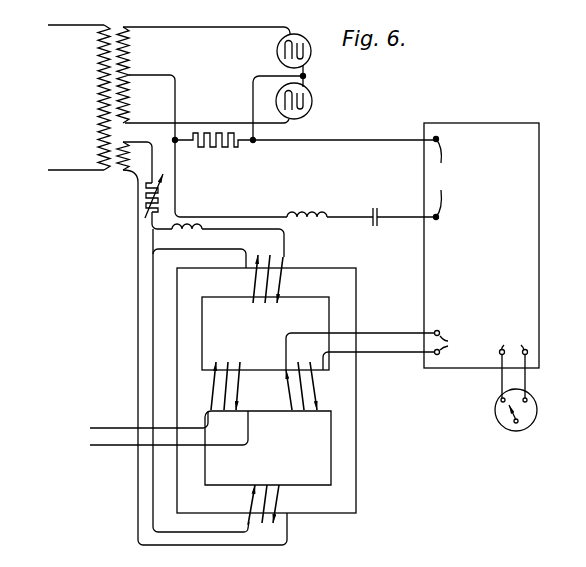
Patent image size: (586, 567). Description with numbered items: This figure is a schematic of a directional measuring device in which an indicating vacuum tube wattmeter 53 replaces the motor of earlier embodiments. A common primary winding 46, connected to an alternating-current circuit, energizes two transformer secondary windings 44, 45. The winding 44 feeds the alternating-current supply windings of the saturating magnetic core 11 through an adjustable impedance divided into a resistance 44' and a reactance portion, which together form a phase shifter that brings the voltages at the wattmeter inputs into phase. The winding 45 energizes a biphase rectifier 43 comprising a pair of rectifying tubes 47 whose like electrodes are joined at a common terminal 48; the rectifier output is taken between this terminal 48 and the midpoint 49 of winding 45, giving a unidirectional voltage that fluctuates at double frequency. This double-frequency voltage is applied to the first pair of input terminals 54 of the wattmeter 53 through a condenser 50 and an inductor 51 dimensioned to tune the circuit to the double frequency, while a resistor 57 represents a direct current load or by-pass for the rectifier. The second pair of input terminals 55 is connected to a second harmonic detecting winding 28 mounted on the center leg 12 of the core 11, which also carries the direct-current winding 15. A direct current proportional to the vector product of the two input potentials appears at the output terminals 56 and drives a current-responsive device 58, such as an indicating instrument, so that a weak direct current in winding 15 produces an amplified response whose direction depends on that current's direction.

The magnetic core 11 is at (206, 457).
The center leg 12 is at (271, 412).
The direct-current winding 15 is at (229, 367).
The second harmonic detecting winding 28 is at (279, 480).
The biphase rectifier 43 is at (218, 57).
The transformer secondary winding 44 is at (134, 157).
The adjustable resistance 44' is at (136, 196).
The transformer secondary winding 45 is at (128, 116).
The primary winding 46 is at (99, 110).
The rectifier elements 47 is at (306, 70).
The common terminal 48 is at (301, 75).
The midpoint of winding 49 is at (131, 76).
The condenser 50 is at (311, 222).
The inductor 51 is at (375, 225).
The vacuum tube wattmeter 53 is at (539, 269).
The input terminals 54 is at (443, 178).
The input terminals 55 is at (450, 343).
The output terminals 56 is at (514, 364).
The resistor 57 is at (226, 147).
The current-responsive device 58 is at (534, 421).